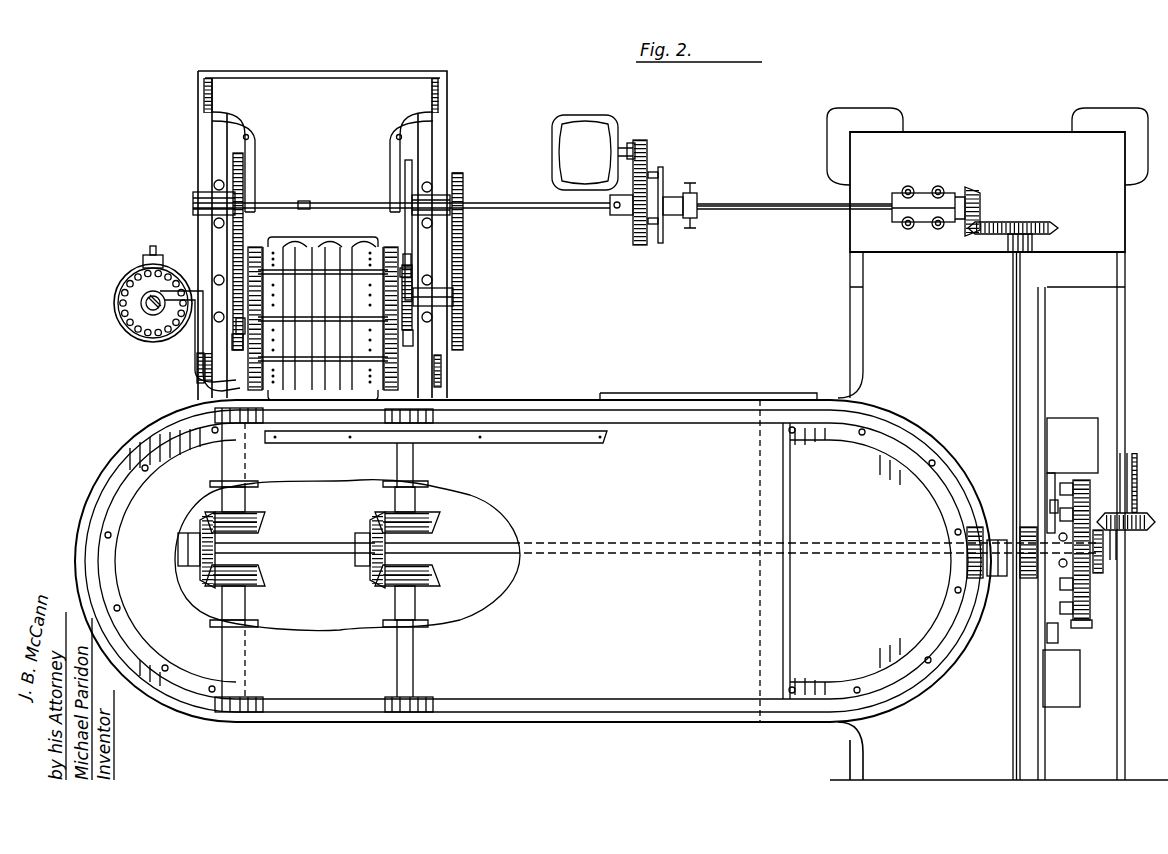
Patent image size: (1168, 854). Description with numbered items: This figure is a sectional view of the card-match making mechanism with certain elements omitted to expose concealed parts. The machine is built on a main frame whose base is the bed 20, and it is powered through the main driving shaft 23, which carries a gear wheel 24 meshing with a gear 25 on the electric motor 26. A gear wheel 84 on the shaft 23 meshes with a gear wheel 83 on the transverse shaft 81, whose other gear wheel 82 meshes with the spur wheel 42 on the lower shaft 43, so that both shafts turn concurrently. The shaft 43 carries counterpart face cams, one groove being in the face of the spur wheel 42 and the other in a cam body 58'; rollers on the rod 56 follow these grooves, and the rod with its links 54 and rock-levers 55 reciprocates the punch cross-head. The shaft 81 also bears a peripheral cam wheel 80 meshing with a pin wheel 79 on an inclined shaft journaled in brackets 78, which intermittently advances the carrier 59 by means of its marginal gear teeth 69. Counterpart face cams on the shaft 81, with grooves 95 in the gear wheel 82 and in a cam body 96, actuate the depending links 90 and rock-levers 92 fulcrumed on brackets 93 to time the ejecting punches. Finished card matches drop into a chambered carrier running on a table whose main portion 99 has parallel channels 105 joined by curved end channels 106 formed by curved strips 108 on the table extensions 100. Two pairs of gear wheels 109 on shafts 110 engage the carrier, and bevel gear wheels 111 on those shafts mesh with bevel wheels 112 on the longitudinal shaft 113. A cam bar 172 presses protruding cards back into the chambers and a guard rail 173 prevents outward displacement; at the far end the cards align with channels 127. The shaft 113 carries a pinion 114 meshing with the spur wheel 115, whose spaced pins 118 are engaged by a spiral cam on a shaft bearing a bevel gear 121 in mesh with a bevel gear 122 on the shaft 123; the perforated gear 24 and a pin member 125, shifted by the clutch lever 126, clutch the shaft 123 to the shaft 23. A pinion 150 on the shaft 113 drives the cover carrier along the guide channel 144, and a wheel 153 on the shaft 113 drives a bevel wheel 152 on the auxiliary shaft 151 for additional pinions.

The bed 20 is at (200, 80).
The spur wheel 42 is at (233, 165).
The rock-levers 55 is at (258, 160).
The lower shaft 43 is at (306, 202).
The rod 56 is at (320, 203).
The links 54 is at (258, 205).
The cam body 58' is at (452, 210).
The carrier 59 is at (300, 242).
The marginal gear teeth 69 is at (242, 258).
The depending links 90 is at (240, 275).
The gear wheel 84 is at (463, 226).
The cam grooves 95 is at (412, 262).
The cam body 96 is at (412, 272).
The transverse shaft 81 is at (462, 301).
The gear wheel 83 is at (463, 340).
The rock-levers 92 is at (242, 324).
The gear wheel 82 is at (236, 338).
The brackets 93 is at (220, 374).
The peripheral cam wheel 80 is at (150, 256).
The pin wheel 79 is at (122, 282).
The brackets 78 is at (132, 309).
The curved end channels 106 is at (150, 446).
The curved strips 108 is at (126, 470).
The table extensions 100 is at (514, 561).
The main portion of the table 99 is at (682, 561).
The parallel channels 105 is at (575, 715).
The gear wheels 109 is at (440, 410).
The shafts 110 is at (426, 530).
The bevel gear wheels 111 is at (257, 526).
The bevel wheel 112 is at (205, 575).
The longitudinally-extending shaft 113 is at (510, 540).
The cam bar 172 is at (576, 444).
The guard rail 173 is at (698, 394).
The electric motor 26 is at (592, 152).
The gear 25 is at (646, 141).
The gear wheel 24 is at (640, 246).
The main driving shaft 23 is at (560, 210).
The pin member 125 is at (662, 170).
The clutch lever 126 is at (692, 229).
The shaft 123 is at (718, 204).
The bevel gear 122 is at (968, 190).
The bevel gear 121 is at (1044, 210).
The pinion 114 is at (1025, 322).
The guide channel 144 is at (1040, 752).
The auxiliary shaft 151 is at (1118, 636).
The bevel wheel 152 is at (1136, 500).
The bevel wheel 153 is at (1108, 532).
The spaced pins 118 is at (1080, 480).
The spur wheel 115 is at (1080, 620).
The pinion 150 is at (1030, 578).
The channels 127 is at (1002, 540).